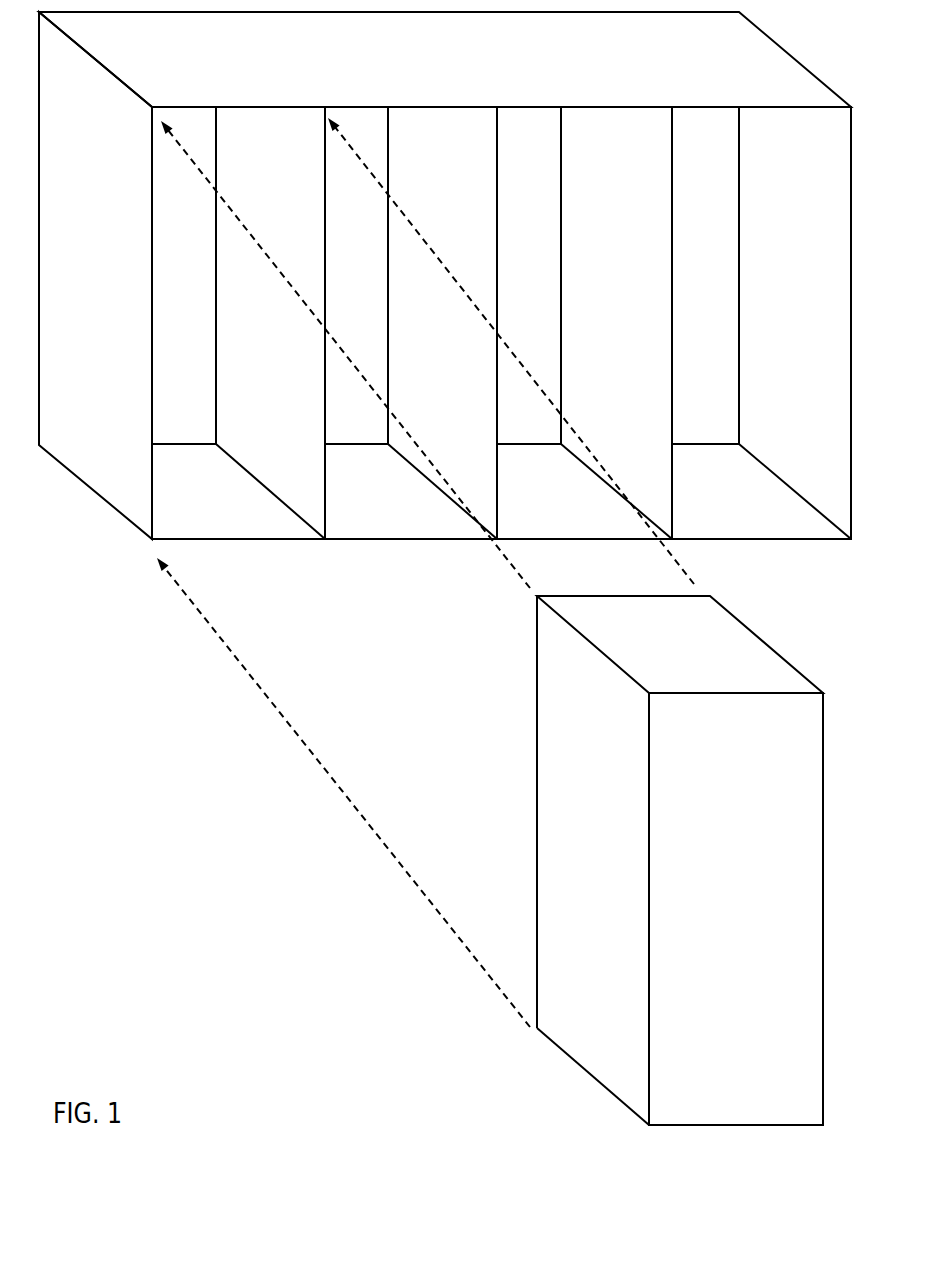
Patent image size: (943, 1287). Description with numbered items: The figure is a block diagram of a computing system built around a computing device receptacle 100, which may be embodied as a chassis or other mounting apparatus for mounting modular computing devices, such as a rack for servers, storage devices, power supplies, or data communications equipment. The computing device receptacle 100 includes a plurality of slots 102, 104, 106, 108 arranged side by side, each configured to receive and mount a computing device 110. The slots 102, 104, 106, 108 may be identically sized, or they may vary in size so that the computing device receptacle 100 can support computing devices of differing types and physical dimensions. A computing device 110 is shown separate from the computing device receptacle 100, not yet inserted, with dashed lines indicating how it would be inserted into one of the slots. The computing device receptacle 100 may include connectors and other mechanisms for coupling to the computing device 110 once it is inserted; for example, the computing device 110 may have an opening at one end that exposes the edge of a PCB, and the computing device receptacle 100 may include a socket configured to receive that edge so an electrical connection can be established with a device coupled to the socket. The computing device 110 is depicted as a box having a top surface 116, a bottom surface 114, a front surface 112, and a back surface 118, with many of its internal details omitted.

The computing device receptacle 100 is at (557, 35).
The slot 102 is at (313, 102).
The slot 104 is at (485, 102).
The slot 106 is at (660, 102).
The slot 108 is at (820, 102).
The computing device 110 is at (747, 898).
The front surface 112 is at (524, 642).
The bottom surface 114 is at (542, 1046).
The top surface 116 is at (740, 653).
The back surface 118 is at (635, 944).